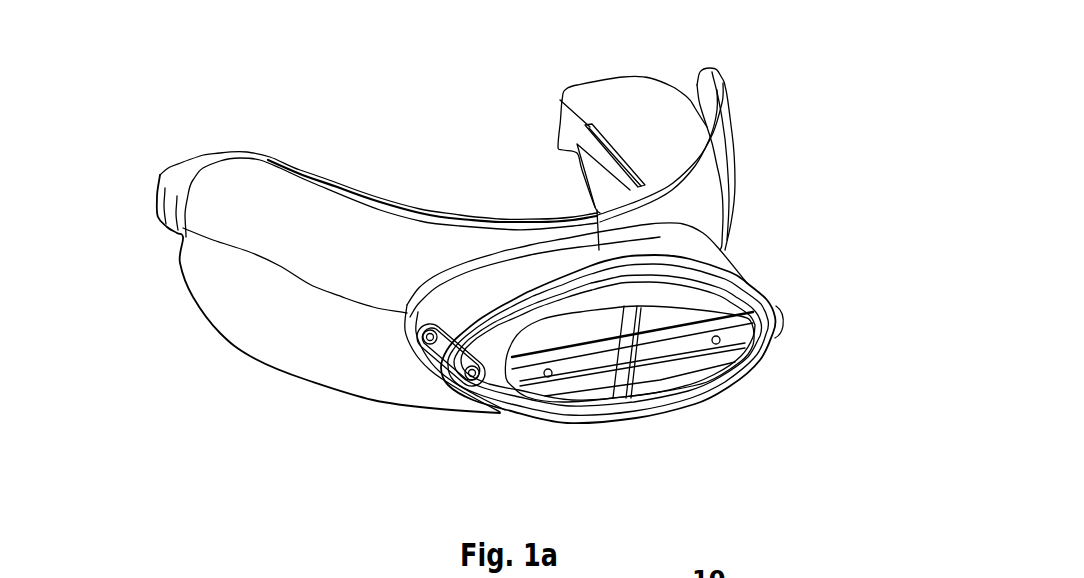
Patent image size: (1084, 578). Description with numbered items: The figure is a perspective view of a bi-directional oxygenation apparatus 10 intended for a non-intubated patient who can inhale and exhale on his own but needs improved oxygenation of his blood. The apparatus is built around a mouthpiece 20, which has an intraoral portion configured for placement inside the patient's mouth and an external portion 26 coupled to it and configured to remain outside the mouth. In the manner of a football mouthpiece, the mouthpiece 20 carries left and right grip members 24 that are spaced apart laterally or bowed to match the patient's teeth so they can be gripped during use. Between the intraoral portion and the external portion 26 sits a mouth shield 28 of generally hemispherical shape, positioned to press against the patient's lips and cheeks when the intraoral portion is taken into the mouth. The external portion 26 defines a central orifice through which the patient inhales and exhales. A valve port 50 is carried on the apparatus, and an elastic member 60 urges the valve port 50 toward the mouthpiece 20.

The bi-directional oxygenation apparatus 10 is at (862, 71).
The mouthpiece 20 is at (327, 132).
The grip members 24 is at (646, 93).
The external portion 26 is at (693, 247).
The mouth shield 28 is at (250, 235).
The valve port 50 is at (677, 347).
The elastic member 60 is at (447, 370).